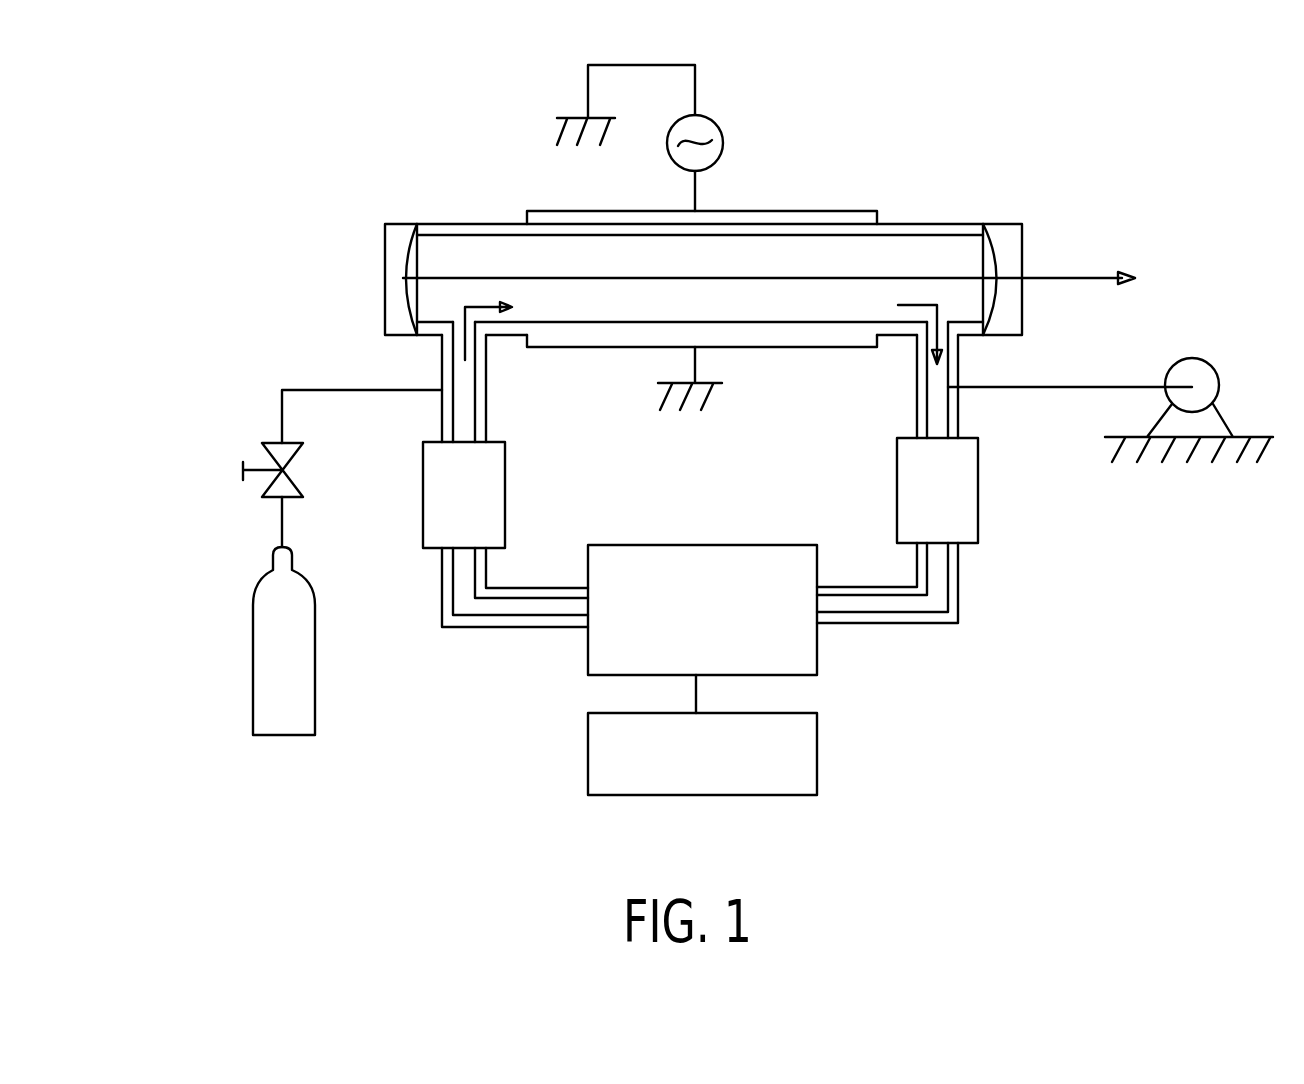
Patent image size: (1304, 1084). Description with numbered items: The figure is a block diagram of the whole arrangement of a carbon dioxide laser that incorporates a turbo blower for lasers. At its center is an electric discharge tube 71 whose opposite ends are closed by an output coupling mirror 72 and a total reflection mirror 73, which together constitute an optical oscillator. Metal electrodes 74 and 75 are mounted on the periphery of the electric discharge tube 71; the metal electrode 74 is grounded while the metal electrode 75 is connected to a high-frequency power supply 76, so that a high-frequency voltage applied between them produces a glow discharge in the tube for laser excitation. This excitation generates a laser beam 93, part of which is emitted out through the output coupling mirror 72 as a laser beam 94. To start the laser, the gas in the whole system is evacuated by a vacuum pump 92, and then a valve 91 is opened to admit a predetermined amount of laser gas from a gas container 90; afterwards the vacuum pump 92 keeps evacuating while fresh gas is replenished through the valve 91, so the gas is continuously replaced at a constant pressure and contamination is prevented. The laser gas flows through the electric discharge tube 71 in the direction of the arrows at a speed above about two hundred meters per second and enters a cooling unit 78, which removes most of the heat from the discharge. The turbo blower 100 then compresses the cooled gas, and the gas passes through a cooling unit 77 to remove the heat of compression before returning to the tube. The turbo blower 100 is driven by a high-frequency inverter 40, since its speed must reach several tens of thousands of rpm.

The inverter 40 is at (818, 752).
The electric discharge tube 71 is at (941, 224).
The output coupling mirror 72 is at (1022, 224).
The total reflection mirror 73 is at (385, 232).
The metal electrode 74 is at (855, 350).
The metal electrode 75 is at (862, 211).
The high-frequency power supply 76 is at (723, 150).
The cooling unit 77 is at (423, 528).
The cooling unit 78 is at (978, 510).
The gas container 90 is at (253, 685).
The valve 91 is at (243, 470).
The vacuum pump 92 is at (1192, 358).
The laser beam 93 is at (488, 278).
The laser beam 94 is at (1092, 278).
The turbo blower 100 is at (693, 545).